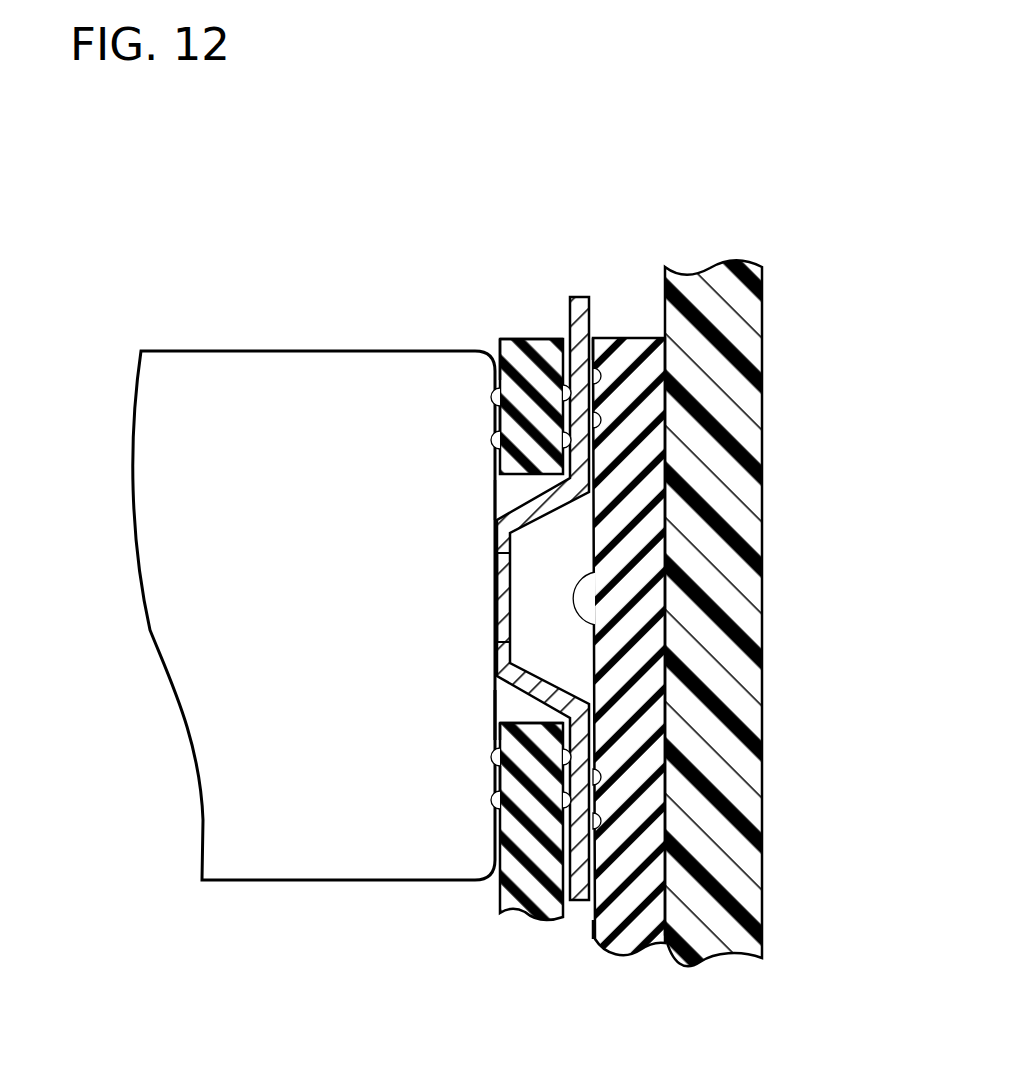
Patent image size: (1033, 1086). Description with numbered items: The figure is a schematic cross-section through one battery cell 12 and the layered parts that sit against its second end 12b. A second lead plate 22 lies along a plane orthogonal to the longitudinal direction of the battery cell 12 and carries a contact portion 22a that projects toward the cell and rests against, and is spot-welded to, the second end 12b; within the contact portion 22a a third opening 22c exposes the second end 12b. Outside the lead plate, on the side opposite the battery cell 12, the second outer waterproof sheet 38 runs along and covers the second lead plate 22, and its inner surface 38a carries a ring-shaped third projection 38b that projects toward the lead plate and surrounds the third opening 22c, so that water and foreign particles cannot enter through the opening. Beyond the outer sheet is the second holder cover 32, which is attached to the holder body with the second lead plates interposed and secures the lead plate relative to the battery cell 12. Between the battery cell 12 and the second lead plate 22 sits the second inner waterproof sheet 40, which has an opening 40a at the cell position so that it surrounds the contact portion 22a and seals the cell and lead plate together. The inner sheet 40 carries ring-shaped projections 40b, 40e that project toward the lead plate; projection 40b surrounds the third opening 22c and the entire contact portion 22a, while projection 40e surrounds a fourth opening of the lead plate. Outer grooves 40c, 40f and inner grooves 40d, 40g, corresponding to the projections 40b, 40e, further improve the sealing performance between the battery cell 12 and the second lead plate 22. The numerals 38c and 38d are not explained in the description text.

The battery cell 12 is at (180, 362).
The second end 12b is at (493, 720).
The second lead plate 22 is at (578, 300).
The contact portion 22a is at (497, 667).
The third opening 22c is at (493, 622).
The second holder cover 32 is at (725, 275).
The second outer waterproof sheet 38 is at (635, 345).
The inner surface 38a is at (595, 625).
The third projection 38b is at (605, 392).
The end portion of elastic member 38c is at (603, 348).
The groove of elastic member 38d is at (612, 437).
The second inner waterproof sheet 40 is at (553, 362).
The opening 40a is at (495, 510).
The projection 40b is at (504, 365).
The outer groove 40c is at (545, 372).
The inner groove 40d is at (496, 392).
The projection 40e is at (493, 420).
The outer groove 40f is at (493, 393).
The inner groove 40g is at (493, 448).